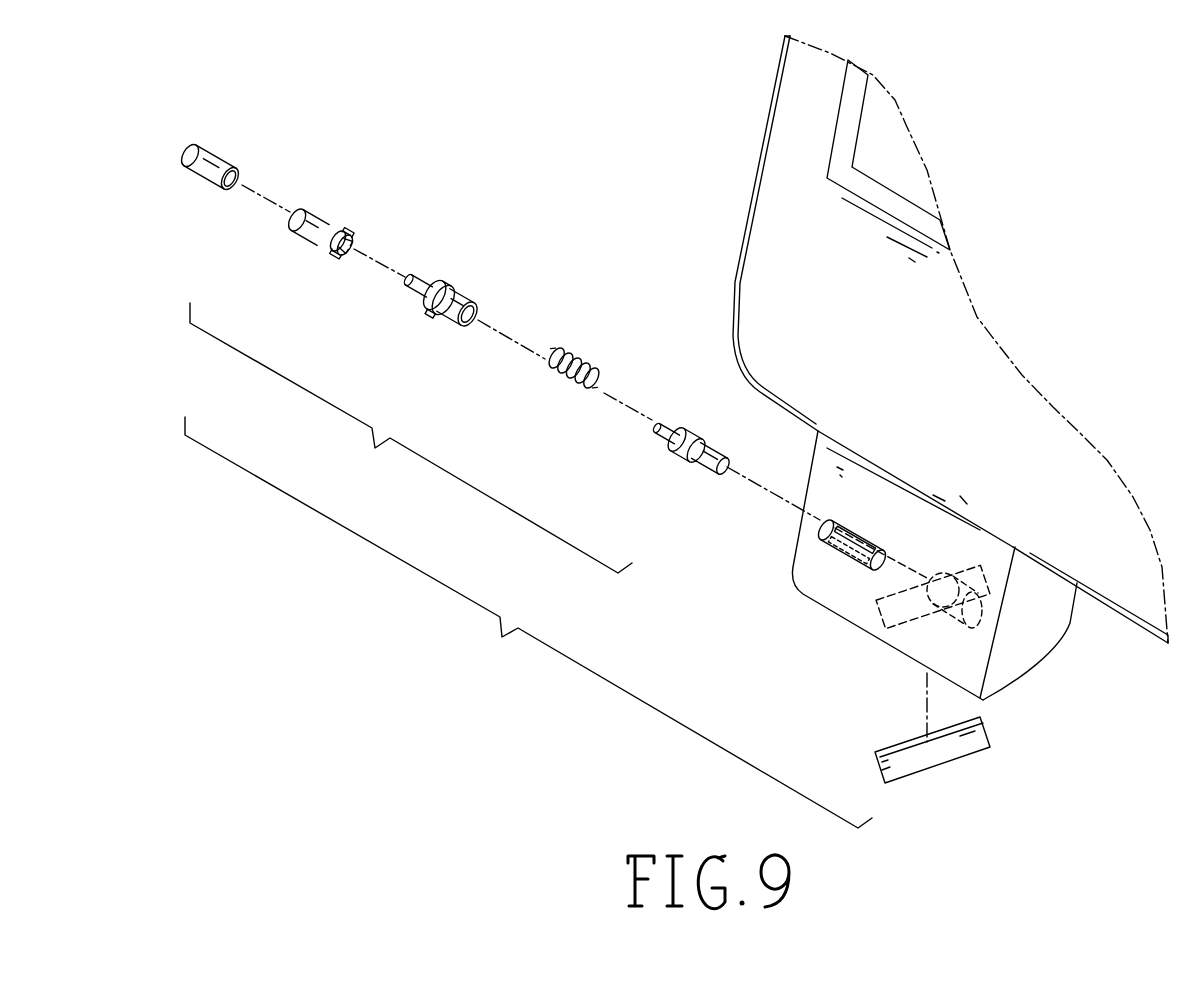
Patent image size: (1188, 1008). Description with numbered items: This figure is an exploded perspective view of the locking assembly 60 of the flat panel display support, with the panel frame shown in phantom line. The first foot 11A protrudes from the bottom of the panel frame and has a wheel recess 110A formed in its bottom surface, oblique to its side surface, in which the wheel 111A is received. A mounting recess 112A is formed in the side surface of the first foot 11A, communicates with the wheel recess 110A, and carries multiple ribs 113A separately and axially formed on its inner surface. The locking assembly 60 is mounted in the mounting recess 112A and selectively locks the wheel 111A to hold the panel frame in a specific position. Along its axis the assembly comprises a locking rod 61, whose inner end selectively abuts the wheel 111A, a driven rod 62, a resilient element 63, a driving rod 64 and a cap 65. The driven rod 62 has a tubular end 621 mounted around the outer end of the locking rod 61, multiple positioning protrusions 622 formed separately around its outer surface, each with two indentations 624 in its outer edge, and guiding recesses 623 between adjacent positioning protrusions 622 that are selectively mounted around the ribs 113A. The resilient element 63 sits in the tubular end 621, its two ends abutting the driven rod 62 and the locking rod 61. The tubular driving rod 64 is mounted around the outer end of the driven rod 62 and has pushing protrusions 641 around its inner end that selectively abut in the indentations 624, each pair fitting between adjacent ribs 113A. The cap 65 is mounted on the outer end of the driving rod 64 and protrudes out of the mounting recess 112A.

The cap 65 is at (210, 157).
The driving rod 64 is at (309, 222).
The pushing protrusions 641 is at (346, 232).
The driven rod 62 is at (459, 312).
The positioning protrusions 622 is at (455, 290).
The indentations 624 is at (425, 292).
The guiding recesses 623 is at (436, 318).
The tubular end 621 is at (456, 326).
The resilient element 63 is at (578, 360).
The locking rod 61 is at (686, 455).
The locking assembly 60 is at (528, 565).
The first foot 11A is at (835, 600).
The mounting recess 112A is at (822, 534).
The ribs 113A is at (846, 528).
The wheel recess 110A is at (910, 625).
The wheel 111A is at (972, 745).